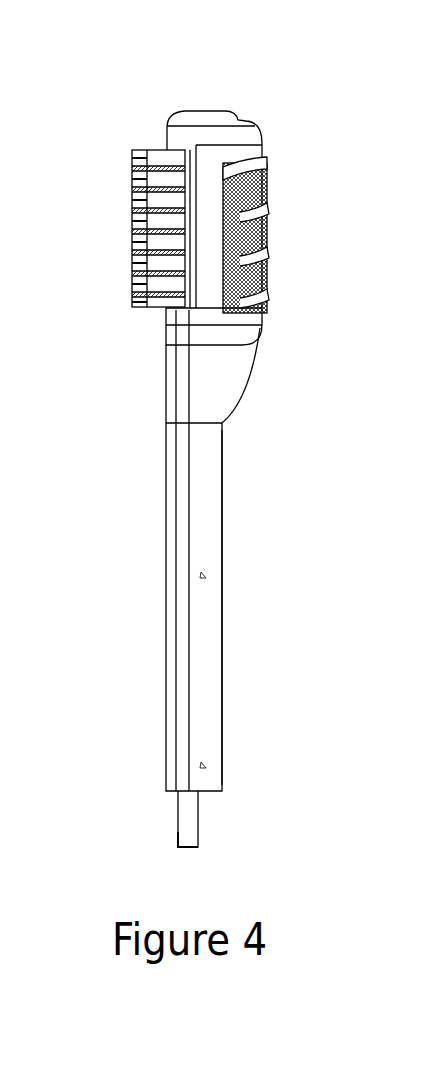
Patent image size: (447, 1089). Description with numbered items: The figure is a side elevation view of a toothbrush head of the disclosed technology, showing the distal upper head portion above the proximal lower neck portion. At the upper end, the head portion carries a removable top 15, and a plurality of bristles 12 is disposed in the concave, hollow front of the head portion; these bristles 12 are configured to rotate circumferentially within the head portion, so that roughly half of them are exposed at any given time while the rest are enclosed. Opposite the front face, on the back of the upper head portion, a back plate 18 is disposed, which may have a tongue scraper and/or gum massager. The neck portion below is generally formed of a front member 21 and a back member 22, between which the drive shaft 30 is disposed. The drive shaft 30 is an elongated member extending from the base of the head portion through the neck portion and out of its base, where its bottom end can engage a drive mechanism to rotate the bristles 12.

The bristles 12 is at (138, 215).
The top 15 is at (215, 120).
The back plate 18 is at (253, 240).
The front member 21 is at (165, 677).
The back member 22 is at (223, 602).
The drive shaft 30 is at (192, 810).